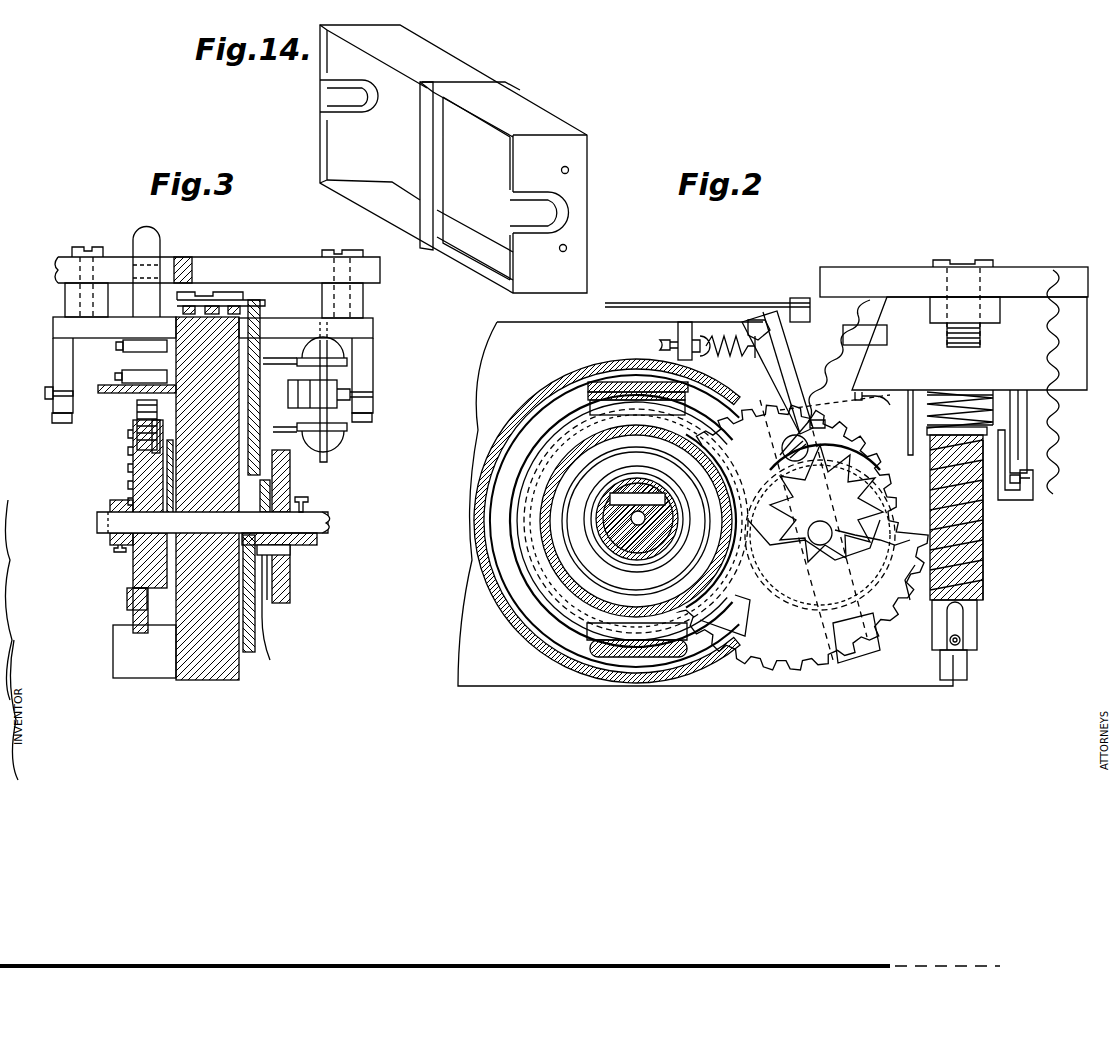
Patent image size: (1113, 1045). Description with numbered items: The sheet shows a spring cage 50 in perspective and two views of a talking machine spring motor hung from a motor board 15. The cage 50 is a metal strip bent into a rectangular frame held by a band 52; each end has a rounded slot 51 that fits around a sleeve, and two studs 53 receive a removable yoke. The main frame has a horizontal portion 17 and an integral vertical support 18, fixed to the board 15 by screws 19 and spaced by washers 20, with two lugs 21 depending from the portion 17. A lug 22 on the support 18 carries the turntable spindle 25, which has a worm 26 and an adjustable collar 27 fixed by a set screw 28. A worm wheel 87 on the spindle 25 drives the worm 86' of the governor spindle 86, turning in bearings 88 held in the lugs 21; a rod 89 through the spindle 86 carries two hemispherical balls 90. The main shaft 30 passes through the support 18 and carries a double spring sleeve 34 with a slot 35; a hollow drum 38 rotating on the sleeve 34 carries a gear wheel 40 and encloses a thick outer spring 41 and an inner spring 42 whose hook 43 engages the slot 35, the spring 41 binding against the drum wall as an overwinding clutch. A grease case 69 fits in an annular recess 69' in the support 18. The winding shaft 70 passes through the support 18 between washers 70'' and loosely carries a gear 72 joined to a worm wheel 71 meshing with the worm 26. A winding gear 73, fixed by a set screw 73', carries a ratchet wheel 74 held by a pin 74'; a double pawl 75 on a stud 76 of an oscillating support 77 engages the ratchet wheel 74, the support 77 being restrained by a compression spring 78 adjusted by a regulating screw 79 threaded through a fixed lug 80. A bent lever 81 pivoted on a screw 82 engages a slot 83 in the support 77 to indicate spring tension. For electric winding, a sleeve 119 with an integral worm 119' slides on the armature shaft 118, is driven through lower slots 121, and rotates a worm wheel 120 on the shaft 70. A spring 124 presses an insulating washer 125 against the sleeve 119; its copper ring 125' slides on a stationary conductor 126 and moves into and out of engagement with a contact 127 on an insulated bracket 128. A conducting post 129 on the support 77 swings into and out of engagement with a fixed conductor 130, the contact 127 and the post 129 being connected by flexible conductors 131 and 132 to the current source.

In FIG. 14, the spring cage 50 is at (540, 115).
In FIG. 14, the slot 51 is at (568, 210).
In FIG. 14, the metal band 52 is at (436, 165).
In FIG. 14, the studs 53 is at (570, 248).
In FIG. 3, the motor board 15 is at (248, 270).
In FIG. 2, the motor board 15 is at (904, 278).
In FIG. 3, the screws 19 is at (346, 253).
In FIG. 3, the turntable spindle 25 is at (147, 238).
In FIG. 3, the washers 20 is at (365, 303).
In FIG. 3, the horizontal portion 17 is at (372, 328).
In FIG. 2, the horizontal portion 17 is at (866, 328).
In FIG. 3, the lugs 21 is at (372, 352).
In FIG. 3, the set screw 28 is at (116, 346).
In FIG. 3, the adjustable collar 27 is at (116, 373).
In FIG. 3, the worm 86' is at (133, 404).
In FIG. 3, the bearings 88 is at (372, 394).
In FIG. 3, the worm wheel 87 is at (135, 410).
In FIG. 3, the worm 26 is at (128, 478).
In FIG. 3, the vertical support 18 is at (228, 660).
In FIG. 2, the vertical support 18 is at (548, 680).
In FIG. 3, the support 77 is at (256, 645).
In FIG. 2, the support 77 is at (815, 380).
In FIG. 3, the hemispherical balls 90 is at (340, 436).
In FIG. 3, the rod 89 is at (328, 458).
In FIG. 3, the governor spindle 86 is at (312, 386).
In FIG. 3, the winding shaft 70 is at (221, 512).
In FIG. 2, the winding shaft 70 is at (826, 503).
In FIG. 3, the washers 70'' is at (205, 496).
In FIG. 3, the gear 72 is at (130, 590).
In FIG. 3, the worm wheel 71 is at (133, 612).
In FIG. 3, the lug 22 is at (135, 656).
In FIG. 3, the winding gear 73 is at (291, 526).
In FIG. 2, the winding gear 73 is at (814, 542).
In FIG. 3, the set screw 73' is at (331, 493).
In FIG. 3, the pin 74' is at (294, 548).
In FIG. 3, the ratchet wheel 74 is at (276, 607).
In FIG. 2, the ratchet wheel 74 is at (876, 541).
In FIG. 2, the double spring sleeve 34 is at (520, 610).
In FIG. 2, the grease cases 69 is at (615, 532).
In FIG. 2, the annular recess 69' is at (622, 569).
In FIG. 2, the slot 35 is at (560, 480).
In FIG. 2, the outer spring 41 is at (600, 470).
In FIG. 2, the inner spring 42 is at (600, 500).
In FIG. 2, the main shaft 30 is at (625, 520).
In FIG. 2, the hook 43 is at (660, 540).
In FIG. 2, the drum 38 is at (705, 640).
In FIG. 2, the fixed lug 80 is at (678, 330).
In FIG. 2, the regulating screw 79 is at (658, 345).
In FIG. 2, the slot 83 is at (752, 332).
In FIG. 2, the bent lever 81 is at (755, 320).
In FIG. 2, the screw 82 is at (798, 298).
In FIG. 2, the compression spring 78 is at (745, 325).
In FIG. 2, the flexible conductor 132 is at (885, 272).
In FIG. 2, the flexible conductor 131 is at (812, 350).
In FIG. 2, the ring 125' is at (1018, 379).
In FIG. 2, the spring 124 is at (935, 392).
In FIG. 2, the washer 125 is at (960, 397).
In FIG. 2, the conductor 126 is at (908, 400).
In FIG. 2, the fixed conductor 130 is at (890, 405).
In FIG. 2, the conducting post 129 is at (828, 405).
In FIG. 2, the stud 76 is at (792, 436).
In FIG. 2, the double pawl 75 is at (832, 470).
In FIG. 2, the gear wheel 40 is at (755, 600).
In FIG. 2, the worm wheel 120 is at (912, 600).
In FIG. 2, the sleeve 119 is at (978, 542).
In FIG. 2, the worm 119' is at (1009, 520).
In FIG. 2, the slots 121 is at (965, 618).
In FIG. 2, the armature shaft 118 is at (967, 670).
In FIG. 2, the fixed bracket 128 is at (1027, 432).
In FIG. 2, the contact 127 is at (1015, 500).